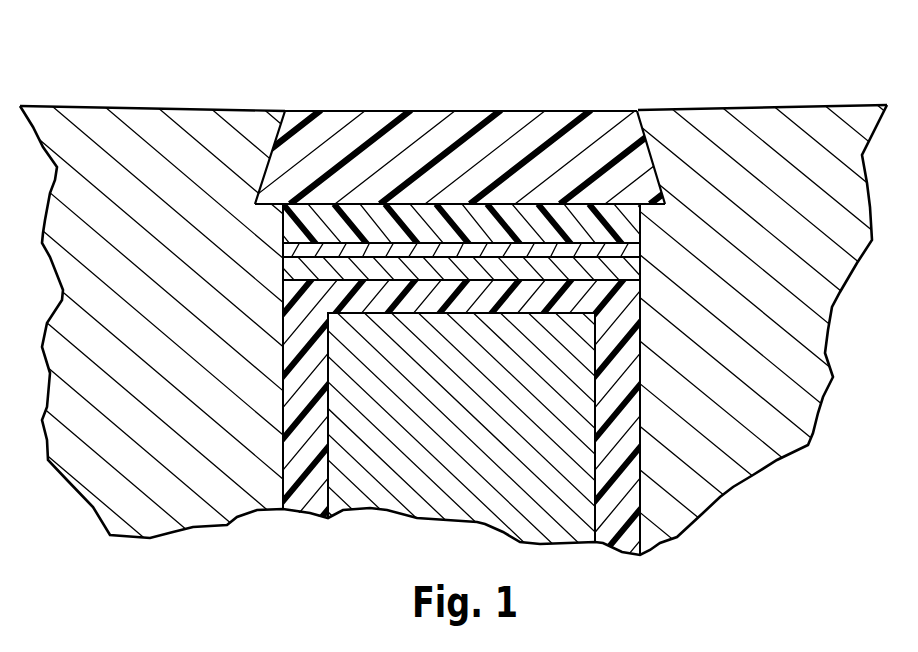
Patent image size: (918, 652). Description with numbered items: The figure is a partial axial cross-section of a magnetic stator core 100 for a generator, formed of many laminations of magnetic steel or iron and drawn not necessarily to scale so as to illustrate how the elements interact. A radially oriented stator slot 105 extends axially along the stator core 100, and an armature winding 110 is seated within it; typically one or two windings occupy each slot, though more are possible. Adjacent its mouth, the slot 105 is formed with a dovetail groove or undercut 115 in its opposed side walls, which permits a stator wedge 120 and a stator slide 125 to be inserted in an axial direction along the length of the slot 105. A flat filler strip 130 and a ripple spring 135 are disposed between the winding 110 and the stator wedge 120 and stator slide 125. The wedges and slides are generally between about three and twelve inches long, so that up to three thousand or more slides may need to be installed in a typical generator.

The magnetic stator core 100 is at (692, 93).
The stator slot 105 is at (292, 94).
The armature winding 110 is at (292, 458).
The dovetail groove or undercut 115 is at (280, 207).
The stator wedge 120 is at (555, 123).
The stator slide 125 is at (627, 215).
The flat filler strip 130 is at (293, 272).
The ripple spring 135 is at (628, 250).